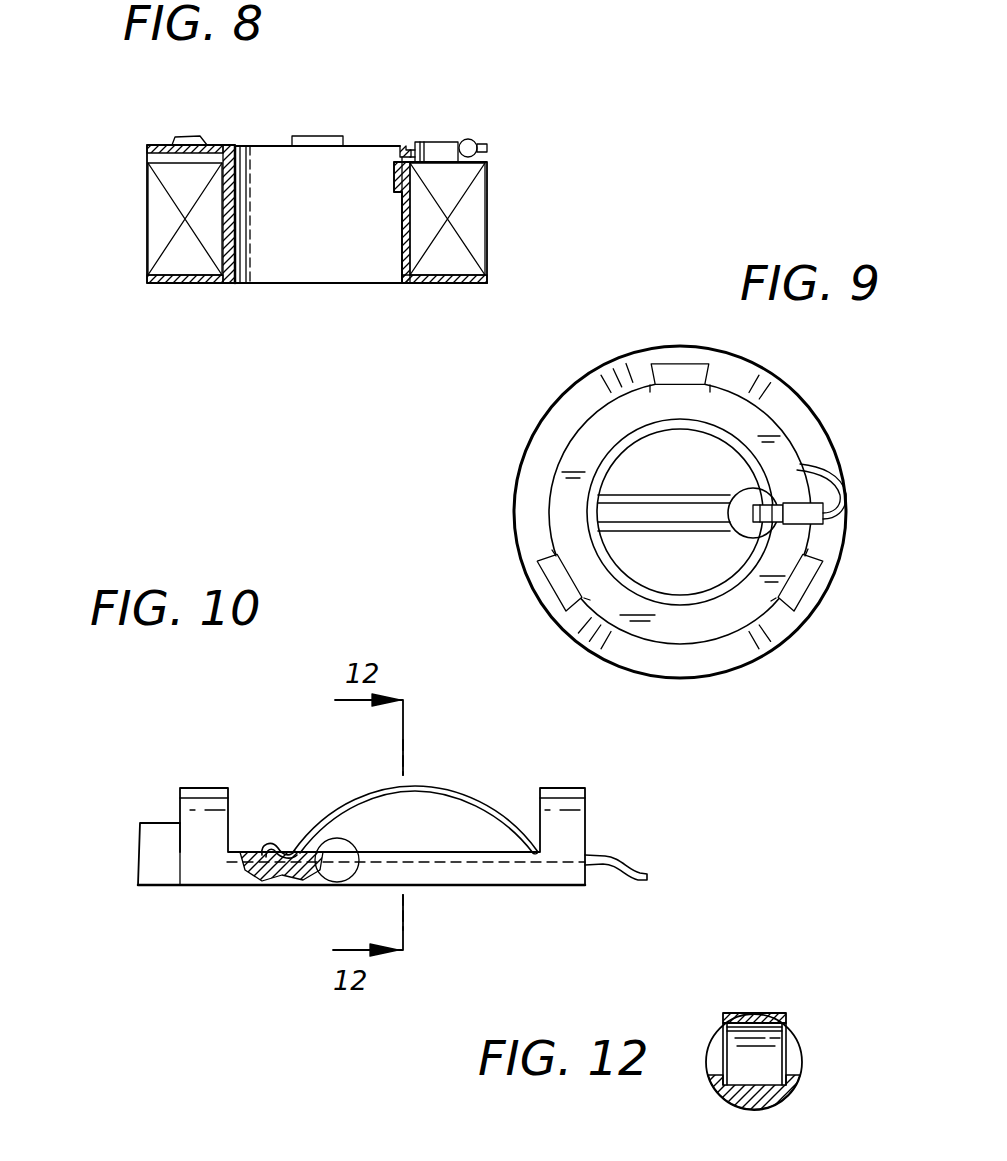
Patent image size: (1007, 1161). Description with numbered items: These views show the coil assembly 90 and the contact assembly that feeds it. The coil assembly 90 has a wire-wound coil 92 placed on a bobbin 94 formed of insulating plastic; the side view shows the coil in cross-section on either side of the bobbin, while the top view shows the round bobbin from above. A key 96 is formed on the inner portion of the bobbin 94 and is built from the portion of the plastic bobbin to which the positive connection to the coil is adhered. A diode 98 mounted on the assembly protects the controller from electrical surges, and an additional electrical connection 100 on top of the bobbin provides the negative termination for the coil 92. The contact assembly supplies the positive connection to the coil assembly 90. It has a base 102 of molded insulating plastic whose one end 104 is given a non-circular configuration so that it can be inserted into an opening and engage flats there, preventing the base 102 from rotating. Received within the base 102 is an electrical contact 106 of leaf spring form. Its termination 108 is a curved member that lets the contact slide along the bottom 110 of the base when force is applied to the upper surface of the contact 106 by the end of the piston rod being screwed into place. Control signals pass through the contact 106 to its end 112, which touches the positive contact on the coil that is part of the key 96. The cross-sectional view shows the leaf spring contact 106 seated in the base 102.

In FIG. 8, the coil assembly 90 is at (487, 190).
In FIG. 8, the wire-wound coil 92 is at (170, 212).
In FIG. 8, the bobbin 94 is at (203, 283).
In FIG. 8, the key 96 is at (400, 197).
In FIG. 9, the key 96 is at (740, 516).
In FIG. 8, the diode 98 is at (440, 147).
In FIG. 9, the diode 98 is at (805, 510).
In FIG. 8, the electrical connection 100 is at (323, 137).
In FIG. 9, the electrical connection 100 is at (562, 500).
In FIG. 10, the base 102 is at (487, 887).
In FIG. 12, the base 102 is at (757, 1100).
In FIG. 10, the end of the base 104 is at (150, 848).
In FIG. 10, the electrical contact 106 is at (493, 807).
In FIG. 12, the electrical contact 106 is at (757, 1013).
In FIG. 10, the termination 108 is at (285, 851).
In FIG. 10, the bottom of the base member 110 is at (353, 887).
In FIG. 10, the end of the electrical contact 112 is at (627, 860).